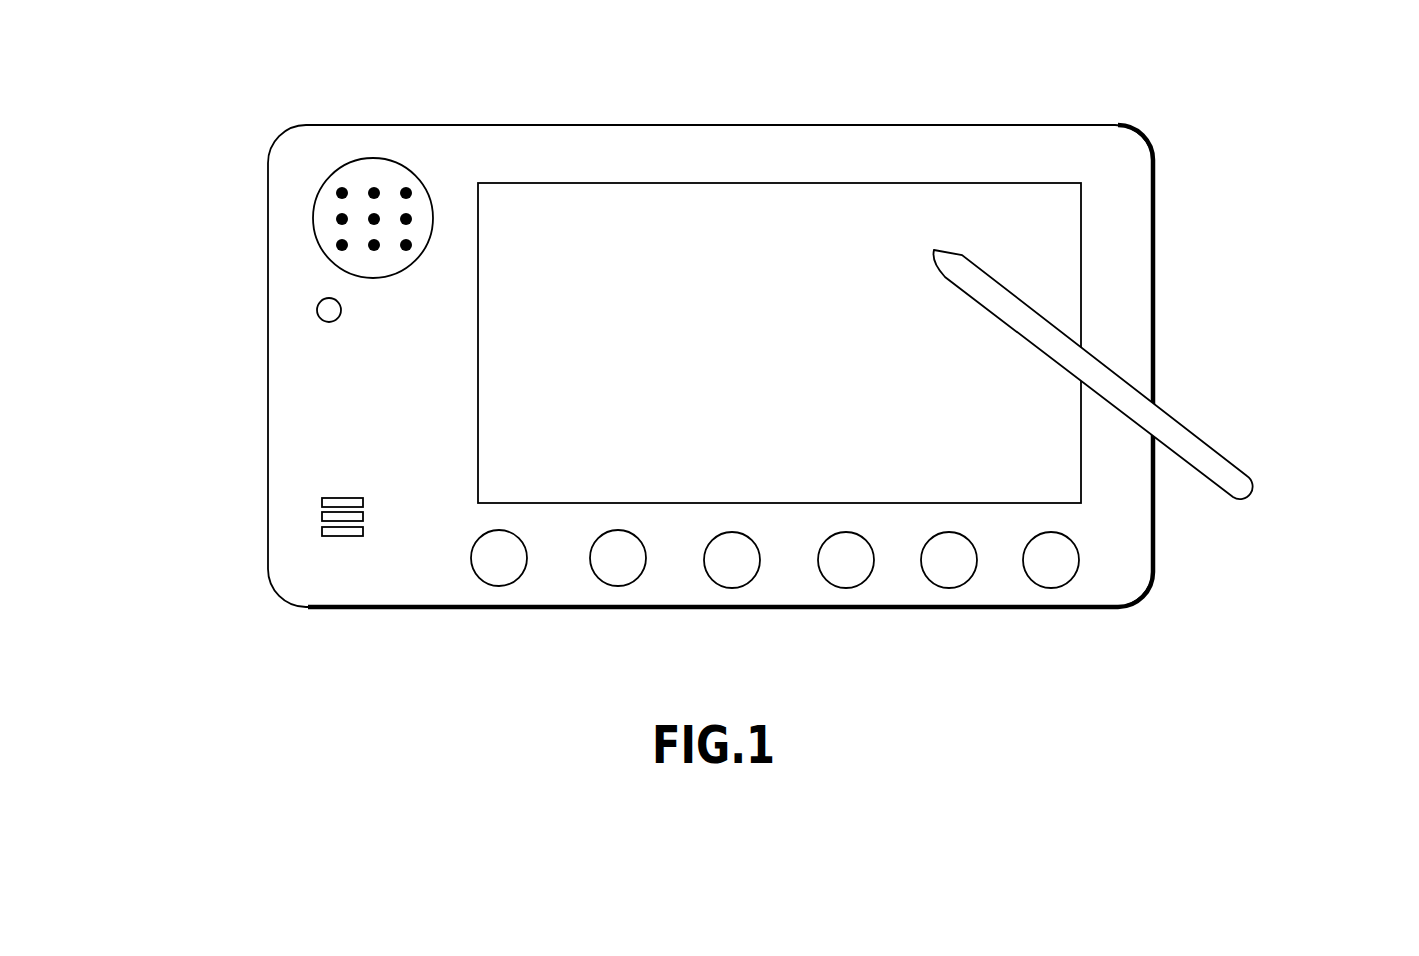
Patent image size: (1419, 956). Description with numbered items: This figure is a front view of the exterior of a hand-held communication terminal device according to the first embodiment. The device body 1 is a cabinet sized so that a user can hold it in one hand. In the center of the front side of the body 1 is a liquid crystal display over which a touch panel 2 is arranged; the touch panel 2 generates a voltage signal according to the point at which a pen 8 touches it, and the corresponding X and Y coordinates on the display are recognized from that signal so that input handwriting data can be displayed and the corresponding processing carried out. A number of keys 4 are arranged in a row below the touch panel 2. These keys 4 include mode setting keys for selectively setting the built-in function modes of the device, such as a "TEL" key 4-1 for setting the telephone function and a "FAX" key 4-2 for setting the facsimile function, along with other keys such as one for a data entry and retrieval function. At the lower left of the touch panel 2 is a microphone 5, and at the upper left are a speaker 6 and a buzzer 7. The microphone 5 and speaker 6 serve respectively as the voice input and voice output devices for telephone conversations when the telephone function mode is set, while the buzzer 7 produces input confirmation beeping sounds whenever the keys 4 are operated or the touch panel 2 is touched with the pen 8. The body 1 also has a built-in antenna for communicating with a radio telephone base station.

The body 1 is at (930, 93).
The touch panel 2 is at (1045, 223).
The keys 4 is at (1057, 588).
The "TEL" key 4-1 is at (499, 586).
The "FAX" key 4-2 is at (618, 586).
The microphone 5 is at (322, 518).
The speaker 6 is at (315, 202).
The buzzer 7 is at (317, 313).
The pen 8 is at (1195, 437).